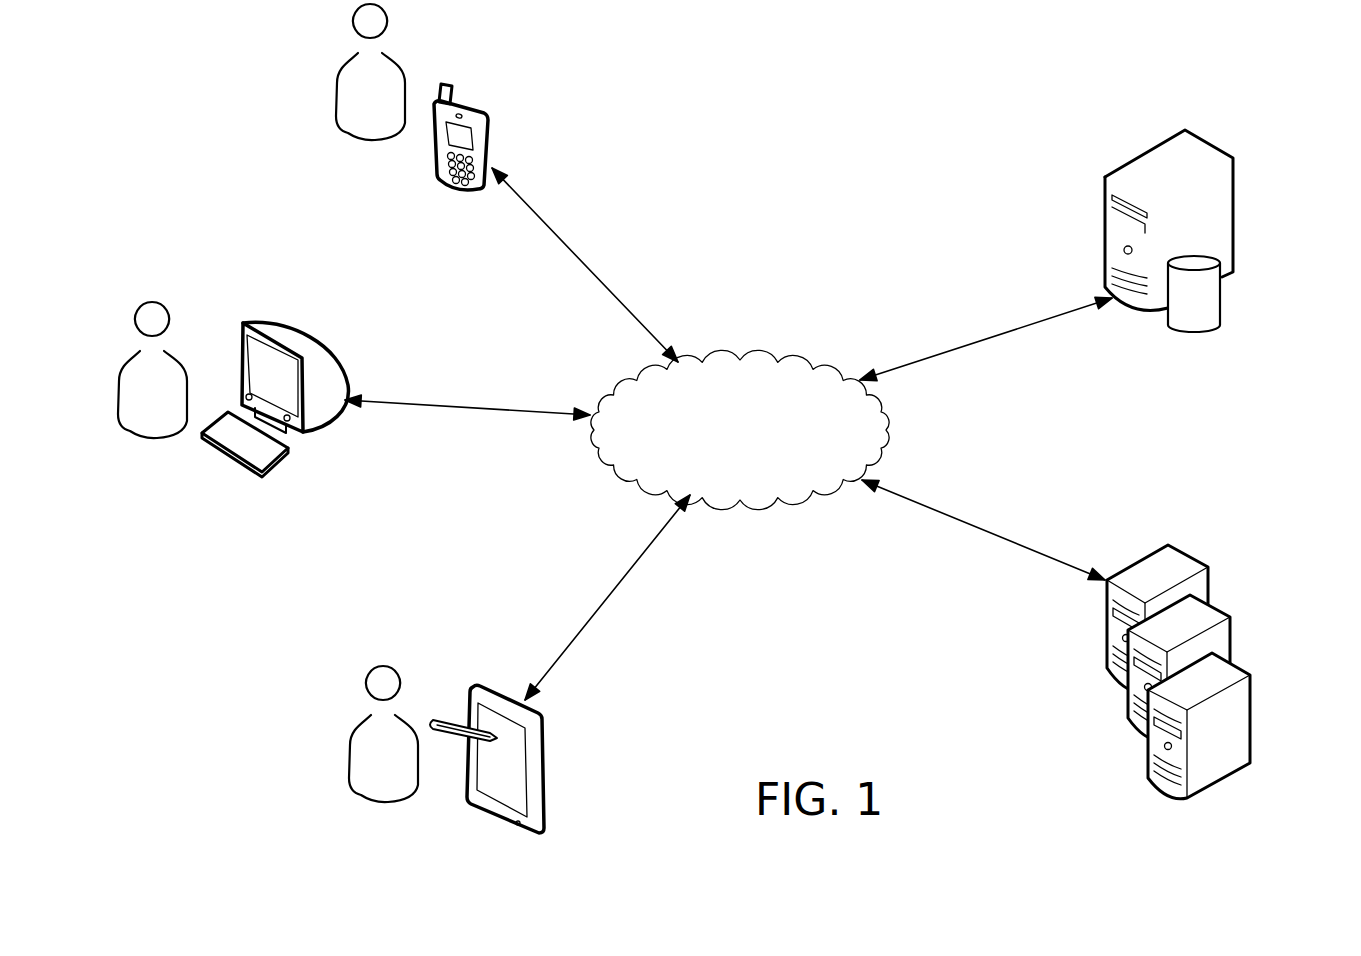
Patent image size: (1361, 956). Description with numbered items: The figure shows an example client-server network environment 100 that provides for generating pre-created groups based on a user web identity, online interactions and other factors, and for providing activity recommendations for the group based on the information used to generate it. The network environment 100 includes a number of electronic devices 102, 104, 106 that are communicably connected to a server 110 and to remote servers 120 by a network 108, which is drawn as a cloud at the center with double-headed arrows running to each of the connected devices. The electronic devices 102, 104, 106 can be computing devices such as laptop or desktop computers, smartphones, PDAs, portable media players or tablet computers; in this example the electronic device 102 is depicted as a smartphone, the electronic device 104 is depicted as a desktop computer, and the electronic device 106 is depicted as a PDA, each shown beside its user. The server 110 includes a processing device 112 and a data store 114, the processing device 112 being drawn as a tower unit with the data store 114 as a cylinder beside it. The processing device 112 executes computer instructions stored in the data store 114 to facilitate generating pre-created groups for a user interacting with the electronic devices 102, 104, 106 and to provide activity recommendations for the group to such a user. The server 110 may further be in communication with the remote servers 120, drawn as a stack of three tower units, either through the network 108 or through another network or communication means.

The network environment 100 is at (864, 95).
The electronic device 102 is at (476, 106).
The electronic device 104 is at (348, 393).
The electronic device 106 is at (480, 687).
The network 108 is at (738, 357).
The server 110 is at (1105, 338).
The processing device 112 is at (1208, 142).
The data store 114 is at (1222, 325).
The remote servers 120 is at (1101, 764).